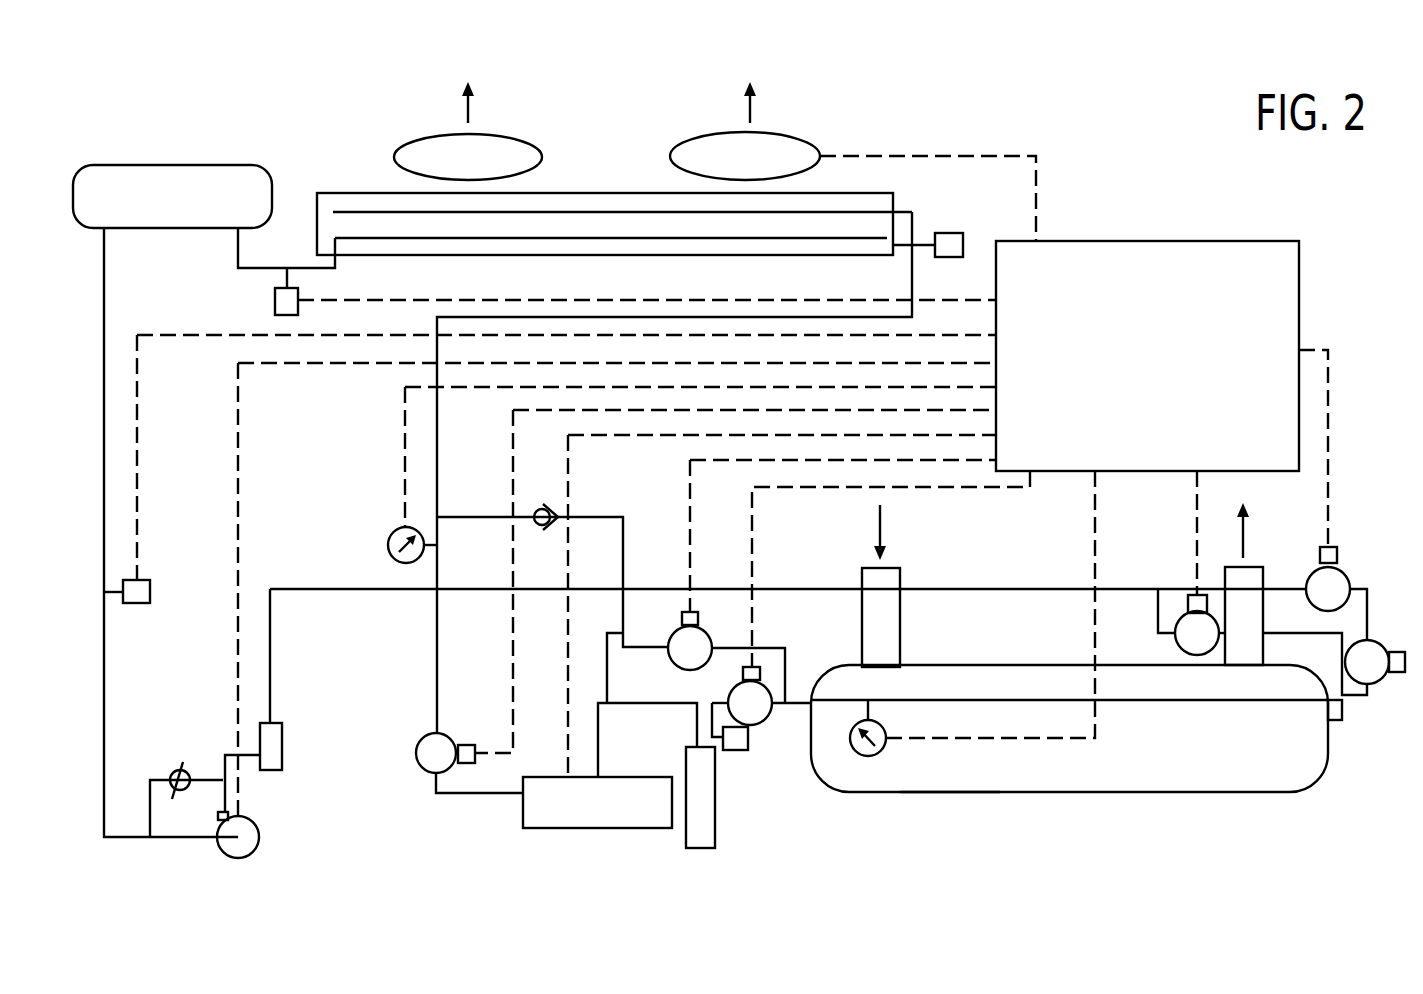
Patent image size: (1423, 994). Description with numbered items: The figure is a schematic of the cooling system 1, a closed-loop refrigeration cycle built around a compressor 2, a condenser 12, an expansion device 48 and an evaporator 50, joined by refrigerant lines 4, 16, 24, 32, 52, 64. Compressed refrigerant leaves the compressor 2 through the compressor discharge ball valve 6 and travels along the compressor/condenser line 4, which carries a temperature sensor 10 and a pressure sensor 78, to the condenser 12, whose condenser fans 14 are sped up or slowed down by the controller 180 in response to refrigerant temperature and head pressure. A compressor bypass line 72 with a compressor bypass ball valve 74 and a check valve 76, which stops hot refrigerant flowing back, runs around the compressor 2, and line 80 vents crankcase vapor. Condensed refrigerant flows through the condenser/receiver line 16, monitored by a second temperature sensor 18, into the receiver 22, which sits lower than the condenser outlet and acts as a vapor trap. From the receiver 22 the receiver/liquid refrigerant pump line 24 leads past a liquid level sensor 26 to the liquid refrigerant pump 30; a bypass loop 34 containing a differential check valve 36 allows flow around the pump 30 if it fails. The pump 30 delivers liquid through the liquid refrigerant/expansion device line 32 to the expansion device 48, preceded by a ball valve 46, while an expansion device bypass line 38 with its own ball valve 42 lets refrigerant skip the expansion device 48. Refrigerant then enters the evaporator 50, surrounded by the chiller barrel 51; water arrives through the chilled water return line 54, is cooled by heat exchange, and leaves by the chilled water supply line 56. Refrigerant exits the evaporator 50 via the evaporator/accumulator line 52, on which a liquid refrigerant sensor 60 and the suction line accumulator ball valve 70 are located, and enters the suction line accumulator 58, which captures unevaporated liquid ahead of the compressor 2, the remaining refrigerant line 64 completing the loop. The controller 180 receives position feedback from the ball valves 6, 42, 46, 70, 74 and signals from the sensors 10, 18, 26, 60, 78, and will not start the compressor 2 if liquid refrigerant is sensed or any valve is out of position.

The refrigeration system 1 is at (196, 104).
The compressor 2 is at (603, 828).
The compressor/condenser line 4 is at (470, 793).
The compressor discharge ball valve 6 is at (415, 742).
The temperature sensor 10 is at (947, 233).
The condenser 12 is at (580, 192).
The condenser fans 14 is at (422, 140).
The condenser/receiver line 16 is at (303, 267).
The temperature sensor 18 is at (275, 302).
The receiver 22 is at (175, 163).
The receiver/liquid refrigerant pump line 24 is at (103, 325).
The liquid level sensor 26 is at (133, 603).
The liquid refrigerant pump 30 is at (253, 850).
The liquid refrigerant/expansion device line 32 is at (225, 788).
The bypass loop 34 is at (148, 805).
The differential check valve 36 is at (173, 773).
The expansion device bypass line 38 is at (1153, 607).
The ball valve 42 is at (1188, 613).
The ball valve 46 is at (1345, 570).
The expansion device 48 is at (1378, 678).
The evaporator 50 is at (1192, 762).
The chiller barrel 51 is at (945, 792).
The evaporator/accumulator line 52 is at (793, 705).
The chilled water return line 54 is at (885, 568).
The chilled water supply line 56 is at (1252, 567).
The suction line accumulator 58 is at (703, 848).
The liquid refrigerant sensor 60 is at (733, 750).
The refrigerant line 64 is at (673, 703).
The suction line accumulator ball valve 70 is at (763, 675).
The compressor bypass line 72 is at (623, 557).
The compressor bypass ball valve 74 is at (702, 625).
The check valve 76 is at (548, 508).
The pressure sensor 78 is at (388, 540).
The line 80 is at (607, 668).
The controller 180 is at (1160, 417).